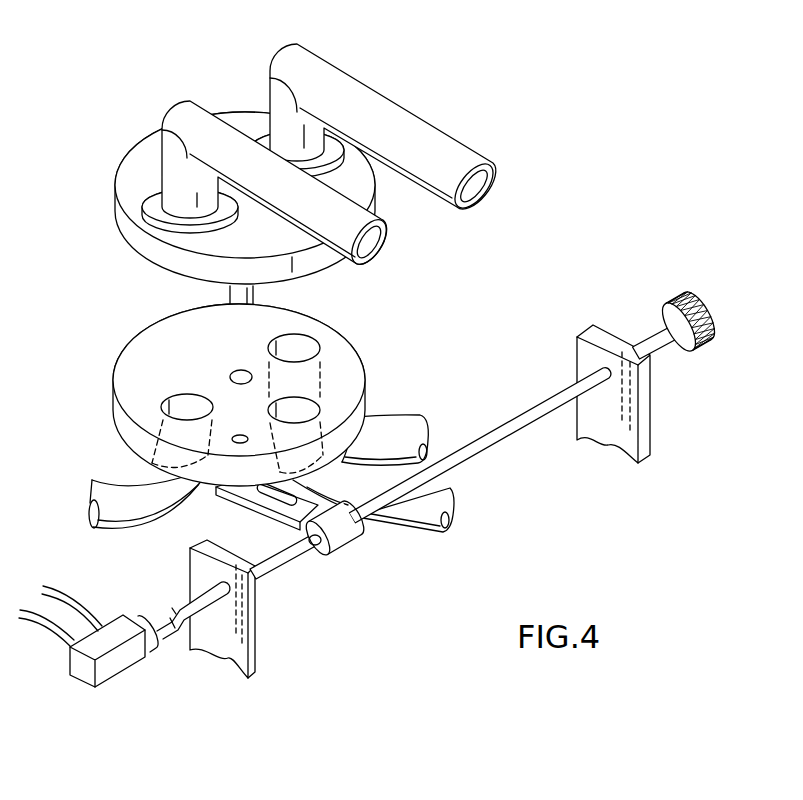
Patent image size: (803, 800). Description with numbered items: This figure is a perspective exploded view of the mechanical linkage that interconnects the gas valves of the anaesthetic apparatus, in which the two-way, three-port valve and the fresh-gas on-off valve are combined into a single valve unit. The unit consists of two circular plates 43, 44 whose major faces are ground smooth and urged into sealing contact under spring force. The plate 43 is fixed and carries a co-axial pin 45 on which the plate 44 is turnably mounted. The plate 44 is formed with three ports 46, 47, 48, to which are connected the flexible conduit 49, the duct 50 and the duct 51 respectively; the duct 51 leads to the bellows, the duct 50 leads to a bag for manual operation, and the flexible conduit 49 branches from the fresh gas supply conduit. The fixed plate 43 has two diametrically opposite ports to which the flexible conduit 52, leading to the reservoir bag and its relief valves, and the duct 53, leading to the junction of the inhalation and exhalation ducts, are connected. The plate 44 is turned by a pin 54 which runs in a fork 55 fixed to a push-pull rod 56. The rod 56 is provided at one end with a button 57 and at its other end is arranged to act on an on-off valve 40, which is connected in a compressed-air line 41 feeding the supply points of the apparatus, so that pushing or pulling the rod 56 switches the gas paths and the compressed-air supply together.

The on-off valve 40 is at (127, 663).
The compressed-air line 41 is at (75, 603).
The circular plate 43 is at (120, 222).
The circular plate 44 is at (232, 389).
The co-axial pin 45 is at (257, 313).
The port 46 is at (177, 398).
The port 47 is at (307, 400).
The port 48 is at (312, 342).
The flexible conduit 49 is at (107, 483).
The flexible duct 50 is at (415, 523).
The flexible duct 51 is at (405, 423).
The flexible conduit 52 is at (192, 118).
The flexible duct 53 is at (353, 87).
The pin 54 is at (240, 435).
The fork 55 is at (345, 545).
The push-pull rod 56 is at (277, 563).
The button 57 is at (717, 340).